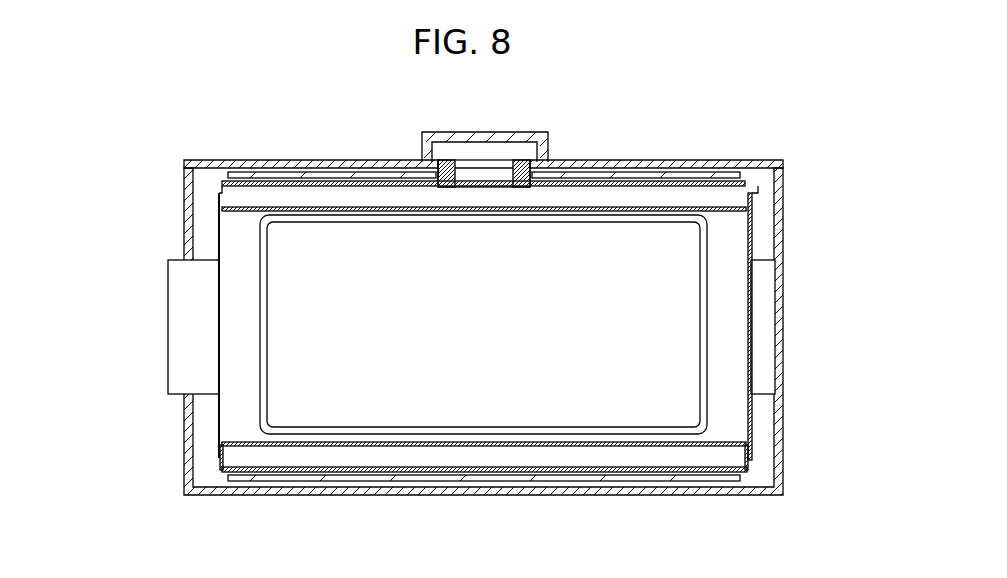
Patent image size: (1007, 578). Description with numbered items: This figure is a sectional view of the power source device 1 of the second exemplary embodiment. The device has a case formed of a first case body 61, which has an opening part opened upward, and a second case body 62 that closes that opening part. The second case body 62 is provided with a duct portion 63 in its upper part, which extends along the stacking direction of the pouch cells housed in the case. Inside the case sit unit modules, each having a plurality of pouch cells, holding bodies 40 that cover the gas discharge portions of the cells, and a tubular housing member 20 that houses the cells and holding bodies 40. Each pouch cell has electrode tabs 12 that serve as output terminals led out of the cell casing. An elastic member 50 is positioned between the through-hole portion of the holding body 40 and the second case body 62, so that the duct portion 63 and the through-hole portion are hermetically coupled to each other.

The power source device 1 is at (840, 484).
The electrode tab 12 is at (182, 344).
The housing member 20 is at (330, 178).
The holding body 40 is at (277, 190).
The elastic member 50 is at (462, 178).
The first case body 61 is at (785, 421).
The second case body 62 is at (785, 220).
The duct portion 63 is at (522, 135).